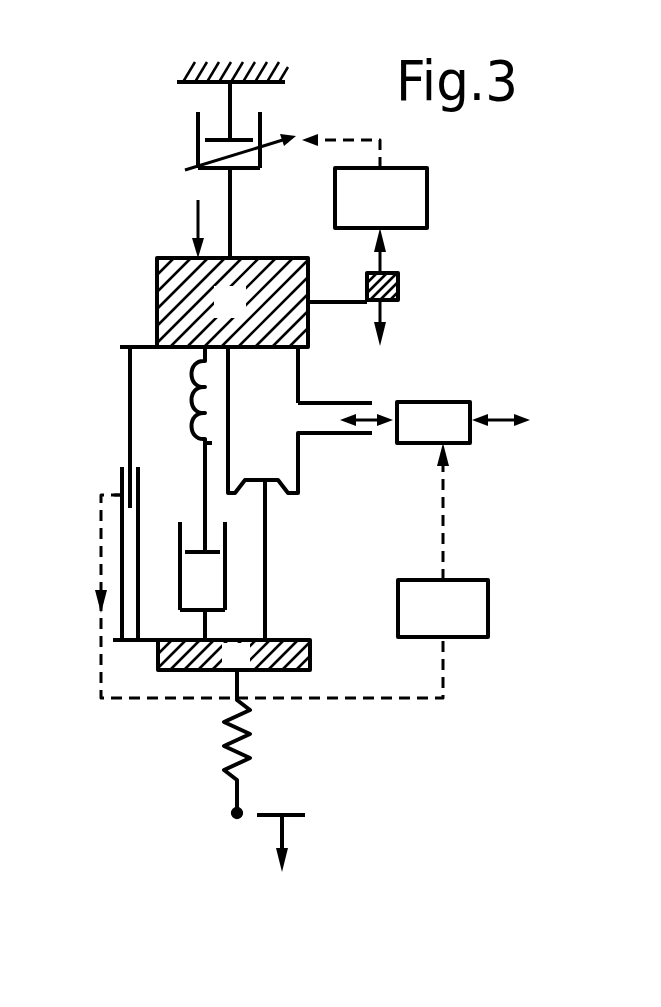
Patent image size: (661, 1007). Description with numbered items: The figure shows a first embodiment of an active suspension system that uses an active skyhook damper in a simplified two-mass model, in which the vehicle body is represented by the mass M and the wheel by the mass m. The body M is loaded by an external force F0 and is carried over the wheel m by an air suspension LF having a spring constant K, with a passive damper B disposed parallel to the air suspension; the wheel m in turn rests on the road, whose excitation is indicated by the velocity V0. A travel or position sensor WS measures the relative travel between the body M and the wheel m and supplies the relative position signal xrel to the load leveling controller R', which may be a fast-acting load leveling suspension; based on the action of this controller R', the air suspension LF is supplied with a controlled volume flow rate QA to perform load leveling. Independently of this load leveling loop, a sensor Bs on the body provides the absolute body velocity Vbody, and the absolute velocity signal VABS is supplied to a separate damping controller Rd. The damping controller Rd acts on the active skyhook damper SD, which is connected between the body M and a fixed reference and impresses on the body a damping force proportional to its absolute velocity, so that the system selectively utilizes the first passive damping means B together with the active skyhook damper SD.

The active skyhook damper SD is at (198, 128).
The external force F0 is at (177, 227).
The vehicle body M is at (232, 302).
The travel or position sensor WS is at (127, 440).
The relative travel signal xrel is at (100, 530).
The passive damper B is at (193, 582).
The air suspension LF is at (270, 443).
The spring constant K is at (267, 570).
The wheel m is at (234, 655).
The road excitation velocity V0 is at (289, 845).
The body acceleration sensor Bs is at (398, 290).
The absolute body velocity signal VABS is at (414, 247).
The body velocity Vbody is at (420, 324).
The damping controller Rd is at (413, 190).
The controlled volume flow rate QA is at (435, 422).
The controller R' is at (518, 617).